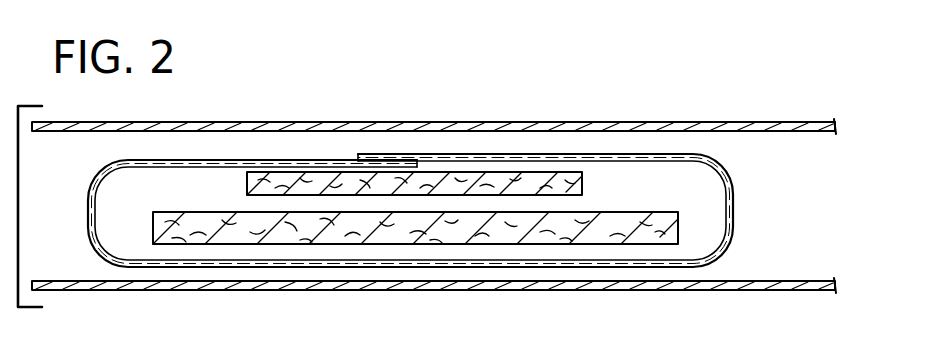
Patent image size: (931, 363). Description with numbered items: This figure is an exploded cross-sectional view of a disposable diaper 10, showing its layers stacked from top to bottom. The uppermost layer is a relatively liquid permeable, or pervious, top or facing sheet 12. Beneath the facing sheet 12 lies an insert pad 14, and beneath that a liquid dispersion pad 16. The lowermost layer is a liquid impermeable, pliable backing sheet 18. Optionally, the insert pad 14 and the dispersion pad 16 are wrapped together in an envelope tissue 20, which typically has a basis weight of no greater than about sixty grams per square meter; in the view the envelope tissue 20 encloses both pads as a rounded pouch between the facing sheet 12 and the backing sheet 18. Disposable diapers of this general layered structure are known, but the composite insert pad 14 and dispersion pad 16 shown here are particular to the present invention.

The disposable diaper 10 is at (549, 104).
The facing sheet 12 is at (677, 121).
The insert pad 14 is at (582, 190).
The liquid dispersion pad 16 is at (678, 212).
The backing sheet 18 is at (752, 278).
The envelope tissue 20 is at (735, 225).